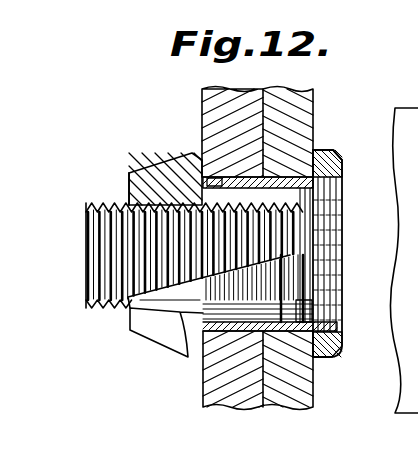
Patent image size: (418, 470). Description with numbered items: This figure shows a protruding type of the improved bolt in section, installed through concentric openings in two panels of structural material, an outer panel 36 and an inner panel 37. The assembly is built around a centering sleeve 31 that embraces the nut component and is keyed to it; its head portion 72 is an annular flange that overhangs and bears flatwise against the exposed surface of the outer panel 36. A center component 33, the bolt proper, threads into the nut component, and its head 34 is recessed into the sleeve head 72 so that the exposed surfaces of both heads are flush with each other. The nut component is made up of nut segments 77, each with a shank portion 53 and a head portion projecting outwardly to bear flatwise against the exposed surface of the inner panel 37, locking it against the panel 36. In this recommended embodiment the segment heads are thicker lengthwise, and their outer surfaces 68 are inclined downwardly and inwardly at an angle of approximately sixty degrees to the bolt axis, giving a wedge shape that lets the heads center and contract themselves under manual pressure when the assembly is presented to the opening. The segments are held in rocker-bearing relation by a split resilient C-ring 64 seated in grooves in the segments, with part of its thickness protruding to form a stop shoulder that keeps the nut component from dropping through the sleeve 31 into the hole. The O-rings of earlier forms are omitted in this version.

The centering sleeve 31 is at (207, 368).
The center component 33 is at (92, 260).
The head of center component 34 is at (342, 243).
The outer panel of structural material 36 is at (305, 103).
The inner panel of structural material 37 is at (205, 97).
The shank portion 53 is at (327, 210).
The C-ring 64 is at (325, 170).
The outer surfaces of segment heads 68 is at (152, 170).
The head portion of centering sleeve 72 is at (322, 153).
The nut segments 77 is at (128, 187).